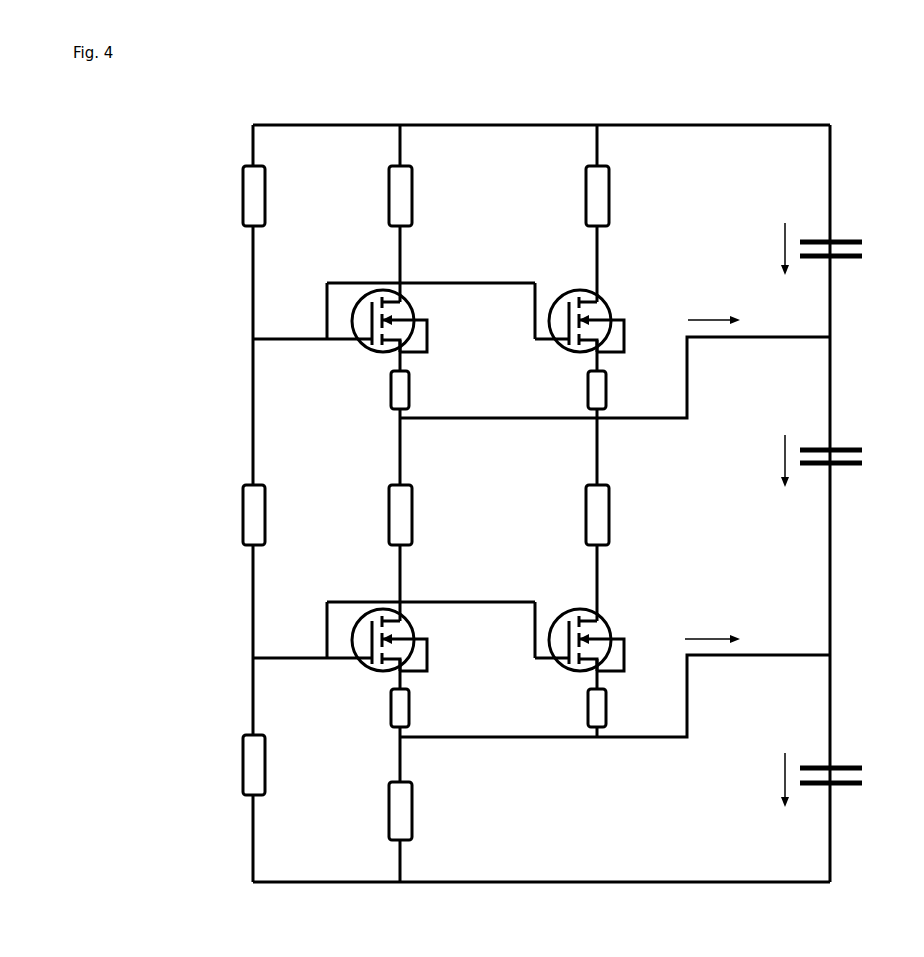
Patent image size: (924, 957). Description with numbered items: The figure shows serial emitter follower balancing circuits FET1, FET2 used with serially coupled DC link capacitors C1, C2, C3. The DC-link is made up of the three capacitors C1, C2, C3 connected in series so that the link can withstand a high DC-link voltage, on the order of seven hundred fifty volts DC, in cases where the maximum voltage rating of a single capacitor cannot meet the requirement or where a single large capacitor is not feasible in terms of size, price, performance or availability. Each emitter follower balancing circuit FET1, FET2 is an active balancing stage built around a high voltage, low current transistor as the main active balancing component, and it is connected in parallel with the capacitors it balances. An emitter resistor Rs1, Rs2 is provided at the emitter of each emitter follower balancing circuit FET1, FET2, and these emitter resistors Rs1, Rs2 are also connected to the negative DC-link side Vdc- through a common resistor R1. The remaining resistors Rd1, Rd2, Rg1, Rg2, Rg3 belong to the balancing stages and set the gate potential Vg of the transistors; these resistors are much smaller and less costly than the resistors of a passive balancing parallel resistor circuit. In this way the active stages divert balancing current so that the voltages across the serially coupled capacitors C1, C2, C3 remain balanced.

The gate resistor Rg3 is at (227, 196).
The resistor Rg2 is at (227, 515).
The resistor Rg1 is at (227, 765).
The drain resistor Rd2 is at (469, 196).
The resistor Rd1 is at (469, 515).
The emitter resistor Rs2 is at (473, 390).
The emitter resistor Rs1 is at (473, 708).
The common resistor R1 is at (374, 811).
The emitter follower balancing circuit FET2 is at (485, 306).
The emitter follower balancing circuit FET1 is at (485, 625).
The DC link capacitor C3 is at (850, 251).
The DC link capacitor C2 is at (850, 460).
The DC link capacitor C1 is at (850, 779).
The gate voltage node Vg is at (411, 470).
The negative DC-link side Vdc- is at (541, 868).